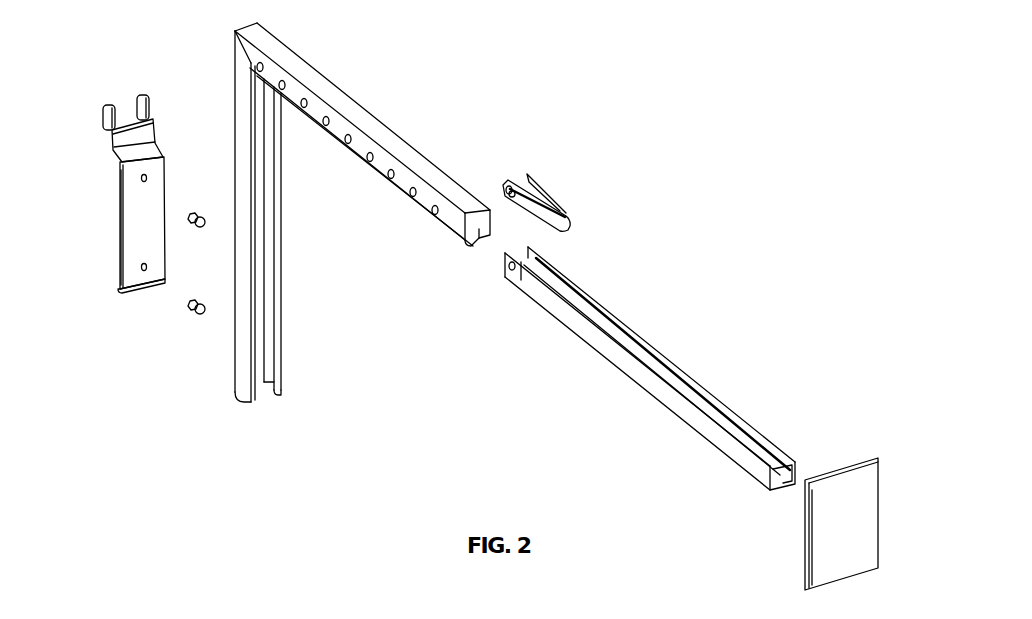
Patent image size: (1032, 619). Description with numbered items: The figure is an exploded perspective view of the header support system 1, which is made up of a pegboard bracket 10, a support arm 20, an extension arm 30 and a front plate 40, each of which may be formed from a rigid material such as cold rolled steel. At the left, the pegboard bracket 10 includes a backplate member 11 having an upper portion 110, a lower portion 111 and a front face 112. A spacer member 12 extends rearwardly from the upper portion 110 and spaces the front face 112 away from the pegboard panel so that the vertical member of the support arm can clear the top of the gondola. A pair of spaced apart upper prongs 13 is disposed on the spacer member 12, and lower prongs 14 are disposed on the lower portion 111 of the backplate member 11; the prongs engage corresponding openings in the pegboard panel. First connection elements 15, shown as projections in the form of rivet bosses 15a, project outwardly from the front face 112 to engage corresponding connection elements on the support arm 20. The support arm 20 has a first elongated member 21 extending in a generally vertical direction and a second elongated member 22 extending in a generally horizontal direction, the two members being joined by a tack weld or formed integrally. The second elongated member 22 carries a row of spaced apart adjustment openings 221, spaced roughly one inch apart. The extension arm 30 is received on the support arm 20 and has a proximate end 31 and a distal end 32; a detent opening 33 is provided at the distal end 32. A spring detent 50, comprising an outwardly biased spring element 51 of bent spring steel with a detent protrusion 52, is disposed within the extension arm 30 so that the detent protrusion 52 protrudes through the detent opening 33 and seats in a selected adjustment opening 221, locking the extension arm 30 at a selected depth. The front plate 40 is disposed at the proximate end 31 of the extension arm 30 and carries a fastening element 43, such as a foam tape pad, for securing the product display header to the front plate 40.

The header support system 1 is at (727, 46).
The pegboard bracket 10 is at (106, 225).
The backplate member 11 is at (135, 198).
The upper portion 110 is at (158, 155).
The lower portion 111 is at (167, 237).
The front face 112 is at (130, 240).
The spacer member 12 is at (118, 164).
The upper prongs 13 is at (107, 102).
The lower prongs 14 is at (120, 285).
The first connection elements 15 is at (191, 330).
The rivet bosses 15a is at (203, 216).
The support arm 20 is at (210, 54).
The first elongated member 21 is at (280, 281).
The second elongated member 22 is at (329, 139).
The adjustment openings 221 is at (256, 68).
The extension arm 30 is at (669, 328).
The proximate end 31 is at (760, 483).
The distal end 32 is at (540, 308).
The detent opening 33 is at (503, 262).
The front plate 40 is at (853, 463).
The fastening element 43 is at (850, 567).
The spring detent 50 is at (586, 153).
The outwardly biased spring element 51 is at (565, 208).
The detent protrusion 52 is at (510, 184).